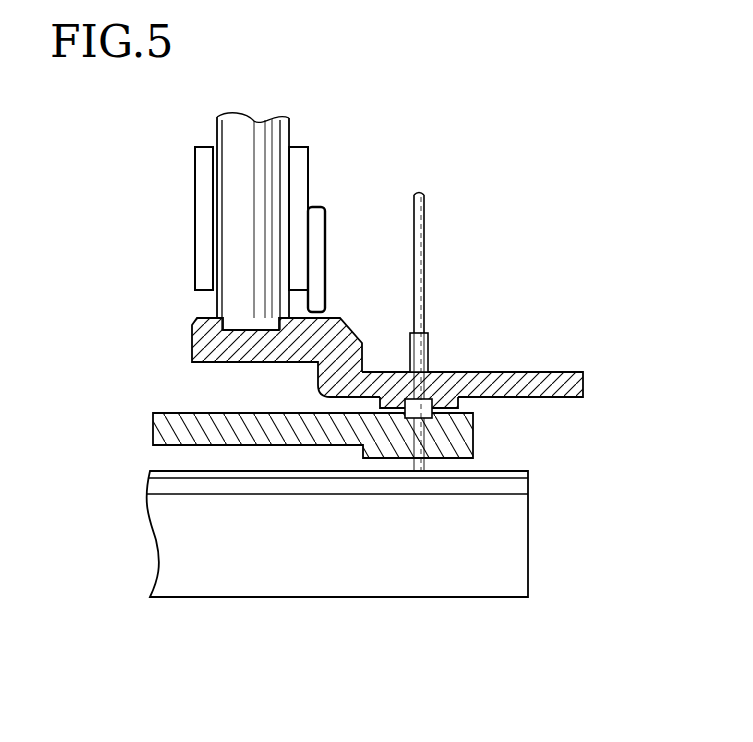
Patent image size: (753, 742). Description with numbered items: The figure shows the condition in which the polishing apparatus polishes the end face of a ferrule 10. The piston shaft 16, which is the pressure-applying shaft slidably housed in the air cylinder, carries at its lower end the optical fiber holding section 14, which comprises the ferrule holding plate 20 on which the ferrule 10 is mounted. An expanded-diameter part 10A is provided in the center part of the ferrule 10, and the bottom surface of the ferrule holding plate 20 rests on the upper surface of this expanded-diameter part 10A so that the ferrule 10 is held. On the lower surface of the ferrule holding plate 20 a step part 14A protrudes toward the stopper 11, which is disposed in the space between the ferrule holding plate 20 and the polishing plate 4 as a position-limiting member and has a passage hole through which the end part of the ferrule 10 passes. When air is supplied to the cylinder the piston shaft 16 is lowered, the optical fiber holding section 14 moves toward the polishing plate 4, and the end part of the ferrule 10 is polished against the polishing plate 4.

The polishing plate 4 is at (510, 560).
The ferrule 10 is at (418, 331).
The expanded-diameter part 10A is at (420, 388).
The stopper 11 is at (472, 447).
The optical fiber holding section 14 is at (528, 309).
The step part 14A is at (462, 403).
The piston shaft 16 is at (282, 132).
The ferrule holding plate 20 is at (560, 380).